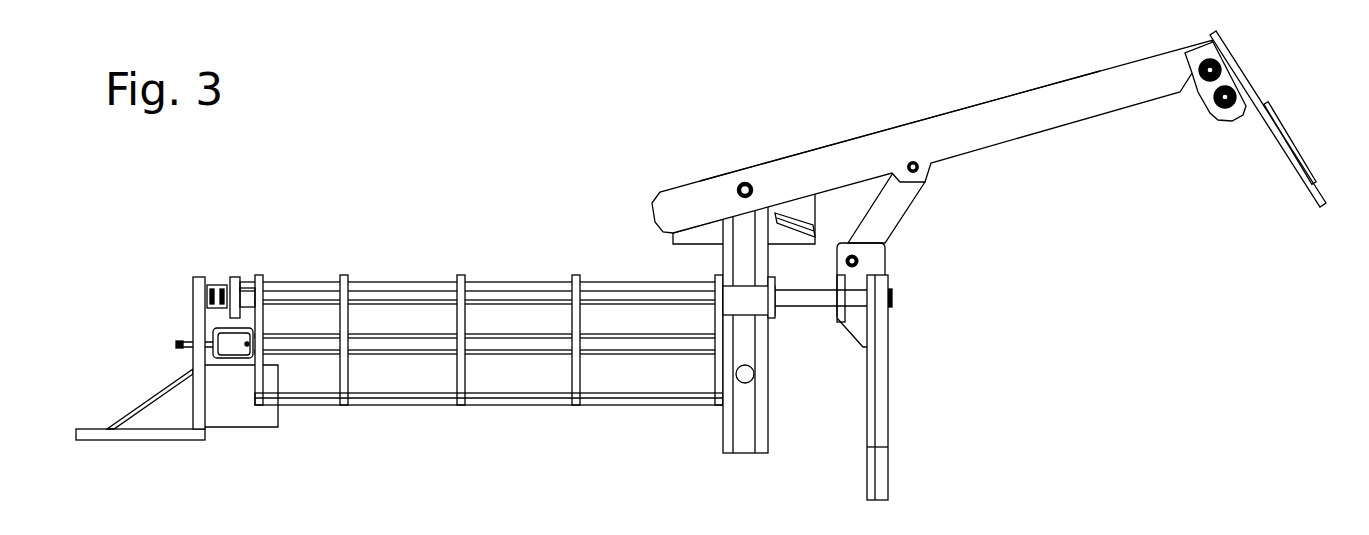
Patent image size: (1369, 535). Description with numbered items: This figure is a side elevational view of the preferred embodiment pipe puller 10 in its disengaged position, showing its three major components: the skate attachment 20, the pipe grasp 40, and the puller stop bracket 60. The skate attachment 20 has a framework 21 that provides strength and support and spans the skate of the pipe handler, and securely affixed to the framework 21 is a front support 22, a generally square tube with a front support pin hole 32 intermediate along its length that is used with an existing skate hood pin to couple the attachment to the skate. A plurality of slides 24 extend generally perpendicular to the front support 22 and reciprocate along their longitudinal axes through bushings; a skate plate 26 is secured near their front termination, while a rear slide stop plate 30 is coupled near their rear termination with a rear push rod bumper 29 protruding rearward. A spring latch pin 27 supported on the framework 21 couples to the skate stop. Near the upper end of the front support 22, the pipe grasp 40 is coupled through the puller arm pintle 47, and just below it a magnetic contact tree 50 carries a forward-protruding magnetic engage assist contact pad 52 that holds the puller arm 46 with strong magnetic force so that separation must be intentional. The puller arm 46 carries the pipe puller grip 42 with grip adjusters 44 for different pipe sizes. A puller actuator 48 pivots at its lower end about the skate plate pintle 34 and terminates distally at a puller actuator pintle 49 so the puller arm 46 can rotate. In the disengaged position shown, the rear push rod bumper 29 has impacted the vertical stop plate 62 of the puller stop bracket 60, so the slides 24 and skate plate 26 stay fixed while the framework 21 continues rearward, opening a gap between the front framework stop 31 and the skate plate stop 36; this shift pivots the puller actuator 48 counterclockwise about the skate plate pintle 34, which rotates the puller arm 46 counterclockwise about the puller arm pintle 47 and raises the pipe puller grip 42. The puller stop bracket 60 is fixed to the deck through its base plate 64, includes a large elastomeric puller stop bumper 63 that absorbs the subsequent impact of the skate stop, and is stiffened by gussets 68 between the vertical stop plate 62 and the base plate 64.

The pipe puller 10 is at (435, 128).
The skate attachment 20 is at (522, 408).
The framework 21 is at (365, 398).
The front support 22 is at (742, 418).
The slides 24 is at (245, 293).
The skate plate 26 is at (885, 428).
The spring latch pin 27 is at (197, 322).
The rear push rod bumper 29 is at (211, 288).
The rear slide stop plate 30 is at (232, 276).
The front framework stop 31 is at (768, 323).
The front support pin hole 32 is at (745, 383).
The skate plate pintle 34 is at (858, 261).
The skate plate stop 36 is at (837, 320).
The pipe grasp 40 is at (795, 145).
The pipe puller grip 42 is at (1243, 75).
The grip adjusters 44 is at (1315, 200).
The puller arm 46 is at (908, 122).
The puller arm pintle 47 is at (738, 187).
The puller actuator 48 is at (893, 210).
The puller actuator pintle 49 is at (932, 170).
The magnetic contact tree 50 is at (667, 243).
The magnetic engage assist contact pad 52 is at (805, 217).
The puller stop bracket 60 is at (172, 372).
The vertical stop plate 62 is at (193, 325).
The puller stop bumper 63 is at (238, 415).
The base plate 64 is at (90, 433).
The gussets 68 is at (145, 418).